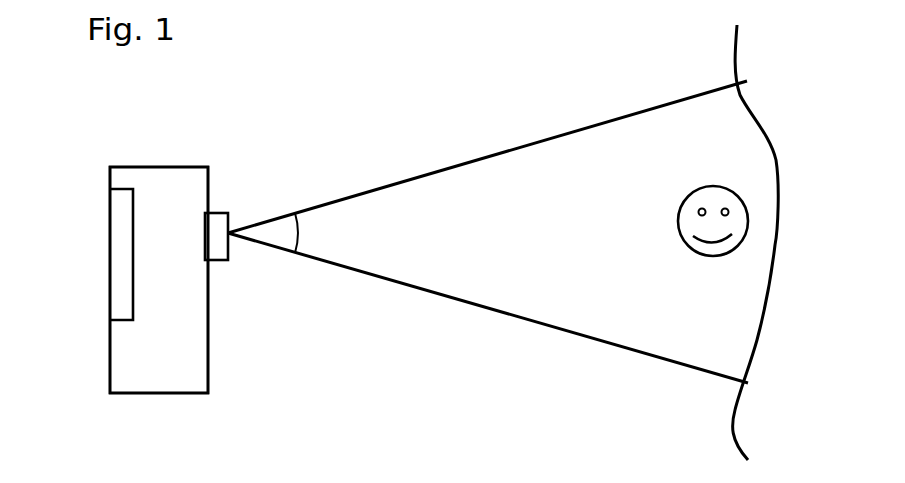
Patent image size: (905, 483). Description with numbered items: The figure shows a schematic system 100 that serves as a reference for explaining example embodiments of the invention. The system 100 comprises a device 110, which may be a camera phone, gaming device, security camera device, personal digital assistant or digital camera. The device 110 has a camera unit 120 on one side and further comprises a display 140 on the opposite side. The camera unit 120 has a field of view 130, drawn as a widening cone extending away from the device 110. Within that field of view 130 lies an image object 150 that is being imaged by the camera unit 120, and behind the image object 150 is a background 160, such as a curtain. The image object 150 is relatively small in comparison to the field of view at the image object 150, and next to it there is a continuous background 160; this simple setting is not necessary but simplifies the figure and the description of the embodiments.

The system 100 is at (197, 134).
The device 110 is at (214, 281).
The camera unit 120 is at (254, 263).
The field of view 130 is at (488, 232).
The display 140 is at (80, 248).
The image object 150 is at (767, 238).
The background 160 is at (713, 235).